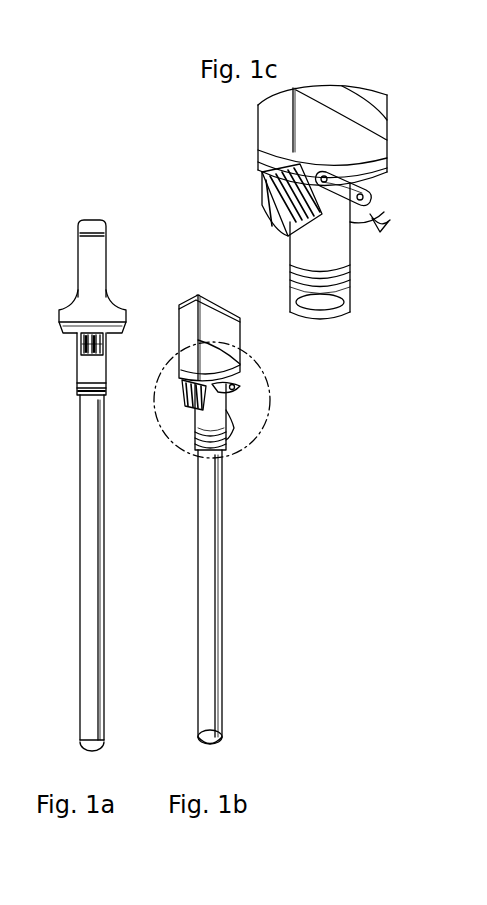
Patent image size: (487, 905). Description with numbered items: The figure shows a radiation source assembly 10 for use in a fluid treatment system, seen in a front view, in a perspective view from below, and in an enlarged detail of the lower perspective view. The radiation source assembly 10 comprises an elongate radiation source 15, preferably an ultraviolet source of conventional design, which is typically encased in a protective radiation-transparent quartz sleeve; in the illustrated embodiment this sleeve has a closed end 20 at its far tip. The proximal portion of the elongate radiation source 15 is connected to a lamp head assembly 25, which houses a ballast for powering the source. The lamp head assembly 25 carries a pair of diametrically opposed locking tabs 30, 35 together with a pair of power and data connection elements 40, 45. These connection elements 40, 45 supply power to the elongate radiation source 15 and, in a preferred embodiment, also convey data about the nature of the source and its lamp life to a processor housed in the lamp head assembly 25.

In FIG. 1A, the radiation source assembly 10 is at (82, 178).
In FIG. 1B, the radiation source assembly 10 is at (190, 280).
In FIG. 1A, the elongate radiation source 15 is at (82, 590).
In FIG. 1B, the elongate radiation source 15 is at (216, 640).
In FIG. 1A, the closed end 20 is at (86, 748).
In FIG. 1B, the closed end 20 is at (216, 742).
In FIG. 1A, the lamp head assembly 25 is at (78, 266).
In FIG. 1B, the lamp head assembly 25 is at (218, 306).
In FIG. 1C, the lamp head assembly 25 is at (402, 92).
In FIG. 1A, the locking tab 30 is at (80, 346).
In FIG. 1B, the locking tab 30 is at (186, 406).
In FIG. 1C, the locking tab 30 is at (272, 176).
In FIG. 1B, the locking tab 35 is at (232, 424).
In FIG. 1C, the locking tab 35 is at (378, 226).
In FIG. 1B, the power and data connection element 40 is at (232, 390).
In FIG. 1C, the power and data connection element 40 is at (342, 172).
In FIG. 1C, the power and data connection element 45 is at (266, 196).